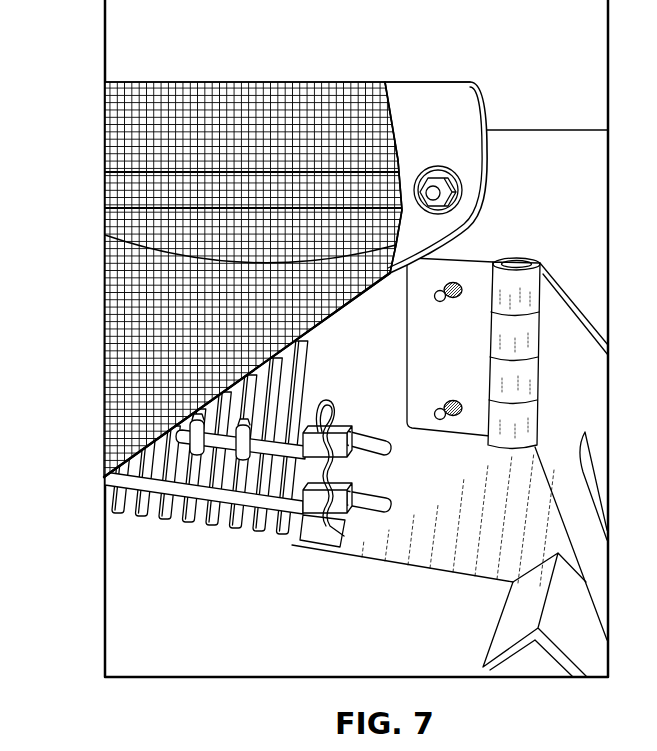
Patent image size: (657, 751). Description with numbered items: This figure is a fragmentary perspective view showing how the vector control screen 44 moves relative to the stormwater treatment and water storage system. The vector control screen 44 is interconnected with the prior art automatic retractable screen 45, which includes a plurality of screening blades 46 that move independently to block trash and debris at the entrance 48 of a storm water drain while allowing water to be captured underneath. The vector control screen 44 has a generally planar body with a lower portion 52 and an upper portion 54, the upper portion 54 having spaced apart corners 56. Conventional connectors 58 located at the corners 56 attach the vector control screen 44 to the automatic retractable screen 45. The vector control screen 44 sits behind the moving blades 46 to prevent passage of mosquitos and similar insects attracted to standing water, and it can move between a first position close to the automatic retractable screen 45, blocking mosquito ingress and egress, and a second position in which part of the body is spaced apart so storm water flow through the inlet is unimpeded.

The vector control screen 44 is at (395, 123).
The automatic retractable screen 45 is at (280, 588).
The screening blades 46 is at (223, 529).
The entrance 48 is at (333, 377).
The lower portion 52 is at (117, 292).
The upper portion 54 is at (228, 82).
The corners 56 is at (388, 82).
The connectors 58 is at (453, 193).